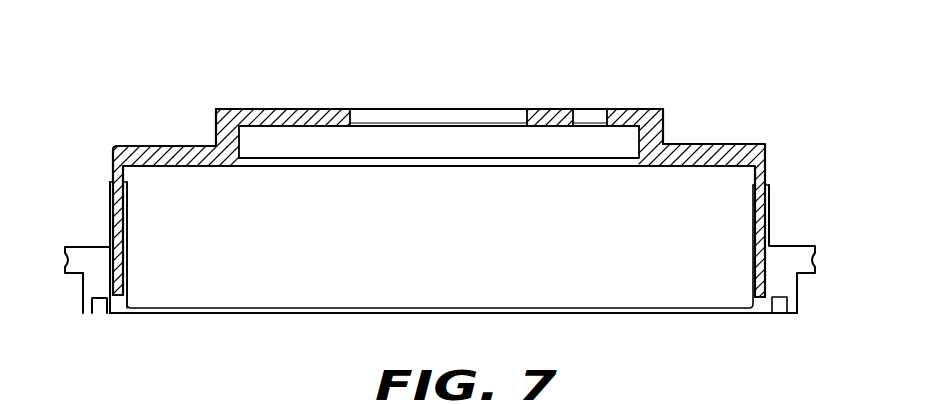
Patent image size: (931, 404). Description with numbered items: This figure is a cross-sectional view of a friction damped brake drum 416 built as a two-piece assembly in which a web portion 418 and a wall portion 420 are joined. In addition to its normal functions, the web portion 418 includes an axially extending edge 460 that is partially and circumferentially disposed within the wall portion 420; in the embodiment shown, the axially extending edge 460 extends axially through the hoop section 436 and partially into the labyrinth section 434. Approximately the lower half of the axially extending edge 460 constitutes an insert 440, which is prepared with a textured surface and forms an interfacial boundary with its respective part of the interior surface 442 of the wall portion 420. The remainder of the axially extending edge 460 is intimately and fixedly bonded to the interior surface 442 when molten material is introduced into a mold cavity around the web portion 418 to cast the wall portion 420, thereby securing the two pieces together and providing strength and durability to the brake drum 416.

The friction damped brake drum 416 is at (722, 91).
The web portion 418 is at (275, 109).
The wall portion 420 is at (80, 190).
The labyrinth section 434 is at (80, 280).
The hoop section 436 is at (109, 205).
The insert 440 is at (122, 245).
The interior surface 442 is at (121, 203).
The axially extending edge 460 is at (121, 192).